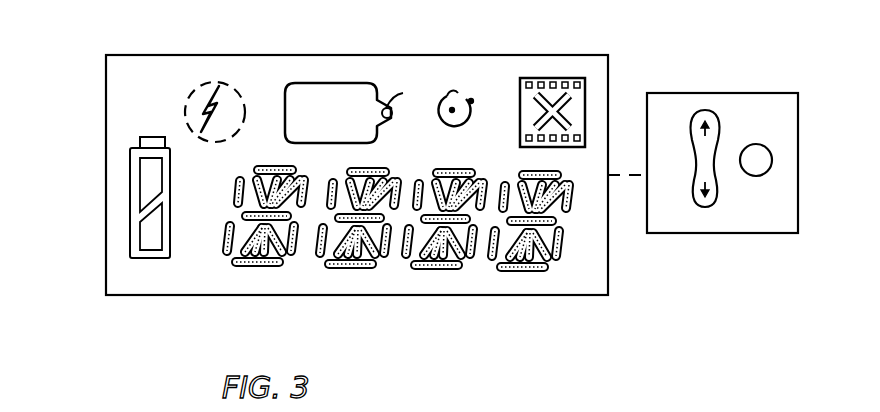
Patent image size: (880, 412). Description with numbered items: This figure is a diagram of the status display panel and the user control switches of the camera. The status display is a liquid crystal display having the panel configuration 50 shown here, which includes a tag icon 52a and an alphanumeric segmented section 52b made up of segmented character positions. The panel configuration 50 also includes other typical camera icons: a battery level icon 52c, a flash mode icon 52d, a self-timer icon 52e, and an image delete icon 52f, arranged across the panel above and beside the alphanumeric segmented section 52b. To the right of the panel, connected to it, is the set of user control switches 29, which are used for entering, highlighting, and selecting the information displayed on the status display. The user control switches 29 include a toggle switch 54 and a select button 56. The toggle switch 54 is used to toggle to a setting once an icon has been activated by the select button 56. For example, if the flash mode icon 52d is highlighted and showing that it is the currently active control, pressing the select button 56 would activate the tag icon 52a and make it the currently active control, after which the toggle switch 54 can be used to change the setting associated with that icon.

The panel configuration 50 is at (470, 55).
The tag icon 52a is at (330, 83).
The alphanumeric segmented section 52b is at (578, 306).
The battery level icon 52c is at (130, 228).
The flash mode icon 52d is at (243, 126).
The self-timer icon 52e is at (437, 120).
The image delete icon 52f is at (560, 78).
The user control switches 29 is at (677, 93).
The toggle switch 54 is at (712, 203).
The select button 56 is at (755, 144).